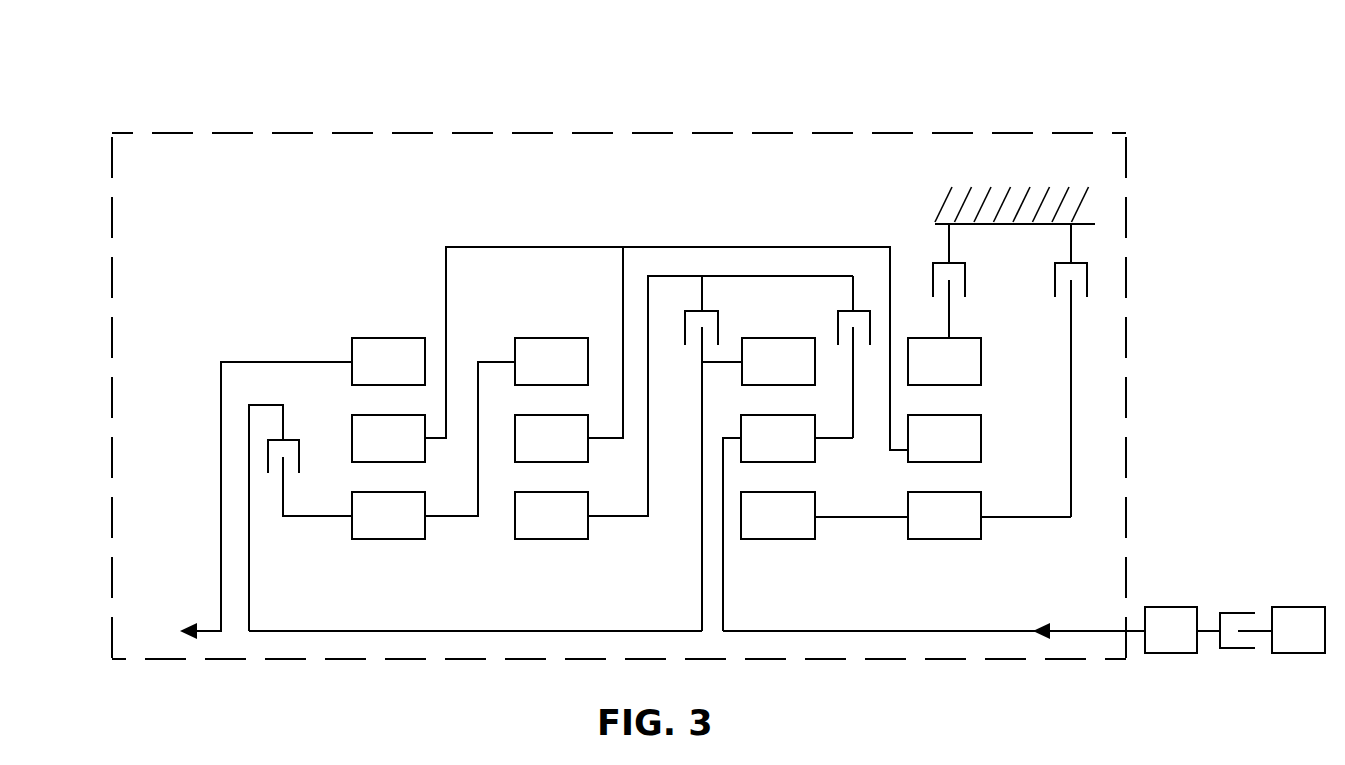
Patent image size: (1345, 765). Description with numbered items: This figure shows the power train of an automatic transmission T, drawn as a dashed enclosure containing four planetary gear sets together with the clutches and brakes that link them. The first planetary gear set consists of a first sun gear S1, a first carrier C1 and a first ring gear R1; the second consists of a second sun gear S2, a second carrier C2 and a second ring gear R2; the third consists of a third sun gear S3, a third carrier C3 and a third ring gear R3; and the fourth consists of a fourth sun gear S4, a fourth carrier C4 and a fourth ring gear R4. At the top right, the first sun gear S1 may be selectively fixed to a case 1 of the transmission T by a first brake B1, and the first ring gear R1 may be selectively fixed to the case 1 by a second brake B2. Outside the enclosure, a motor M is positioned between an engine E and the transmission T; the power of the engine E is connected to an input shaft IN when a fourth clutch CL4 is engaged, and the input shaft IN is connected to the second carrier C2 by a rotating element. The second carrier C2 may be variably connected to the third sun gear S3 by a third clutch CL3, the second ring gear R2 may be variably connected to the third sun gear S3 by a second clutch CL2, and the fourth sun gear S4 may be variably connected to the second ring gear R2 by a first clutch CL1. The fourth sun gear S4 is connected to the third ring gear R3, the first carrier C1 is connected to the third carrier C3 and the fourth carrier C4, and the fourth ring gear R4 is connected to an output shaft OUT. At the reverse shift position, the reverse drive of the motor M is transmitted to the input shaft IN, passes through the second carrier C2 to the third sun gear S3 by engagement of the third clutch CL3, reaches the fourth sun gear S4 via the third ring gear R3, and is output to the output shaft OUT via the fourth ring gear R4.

The transmission T is at (645, 133).
The case 1 is at (1003, 195).
The first brake B1 is at (1088, 370).
The second brake B2 is at (966, 281).
The first clutch CL1 is at (300, 518).
The second clutch CL2 is at (724, 453).
The third clutch CL3 is at (831, 357).
The fourth clutch CL4 is at (1234, 615).
The first ring gear R1 is at (944, 361).
The second ring gear R2 is at (778, 361).
The third ring gear R3 is at (506, 427).
The fourth ring gear R4 is at (311, 484).
The first carrier C1 is at (944, 438).
The second carrier C2 is at (769, 523).
The third carrier C3 is at (569, 354).
The fourth carrier C4 is at (630, 354).
The first sun gear S1 is at (989, 515).
The second sun gear S2 is at (824, 515).
The third sun gear S3 is at (684, 407).
The fourth sun gear S4 is at (388, 515).
The input shaft IN is at (697, 621).
The output shaft OUT is at (173, 632).
The motor M is at (1171, 630).
The engine E is at (1298, 630).